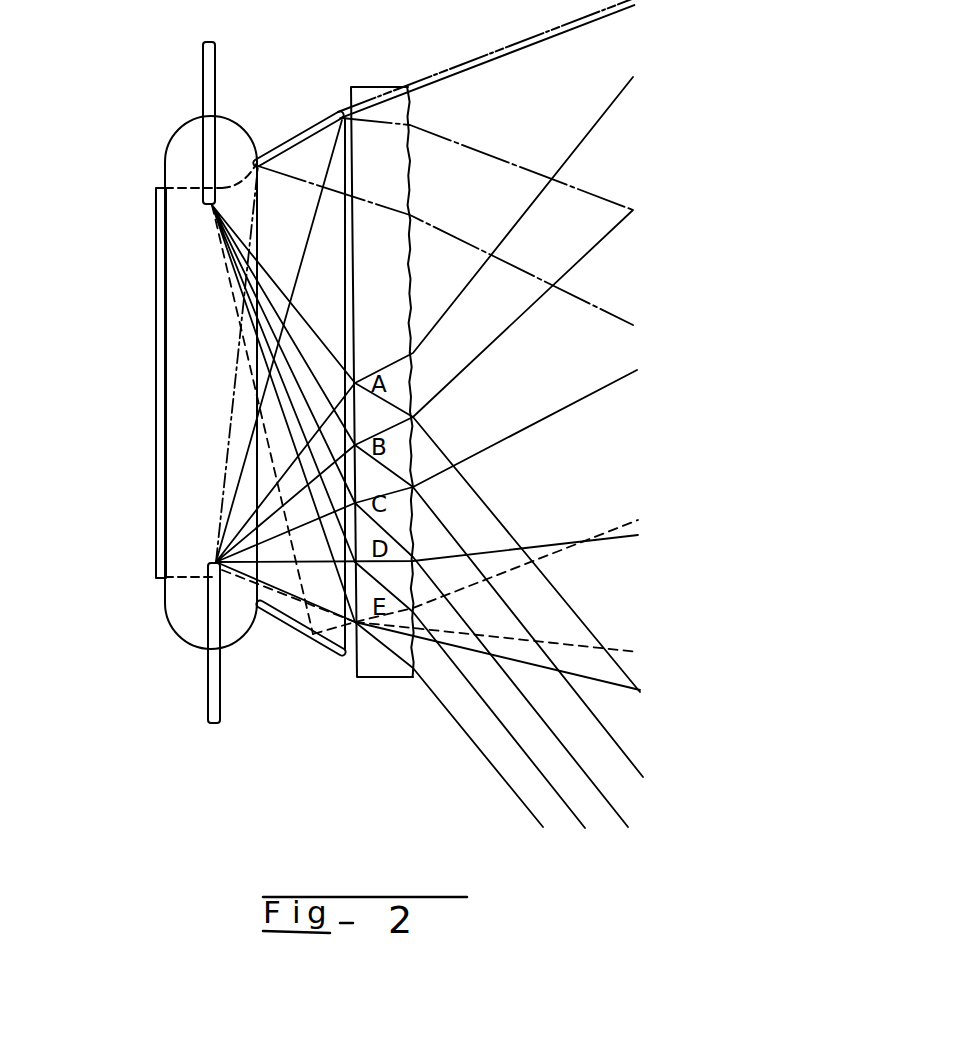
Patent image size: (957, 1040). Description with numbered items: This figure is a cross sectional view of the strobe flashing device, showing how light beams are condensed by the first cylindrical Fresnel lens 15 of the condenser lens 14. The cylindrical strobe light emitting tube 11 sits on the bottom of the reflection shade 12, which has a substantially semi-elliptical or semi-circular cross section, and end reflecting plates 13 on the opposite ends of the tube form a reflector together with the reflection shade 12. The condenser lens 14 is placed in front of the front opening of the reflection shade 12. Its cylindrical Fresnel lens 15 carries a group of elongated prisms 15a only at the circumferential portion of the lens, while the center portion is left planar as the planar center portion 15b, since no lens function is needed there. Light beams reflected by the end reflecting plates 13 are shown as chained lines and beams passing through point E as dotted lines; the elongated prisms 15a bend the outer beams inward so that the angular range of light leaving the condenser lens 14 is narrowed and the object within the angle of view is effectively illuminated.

The strobe light emitting tube 11 is at (177, 497).
The reflection shade 12 is at (167, 430).
The end reflecting plates 13 is at (298, 134).
The condenser lens 14 is at (436, 360).
The first cylindrical Fresnel lens 15 is at (464, 382).
The elongated prisms 15a is at (411, 427).
The planar center portion 15b is at (413, 347).